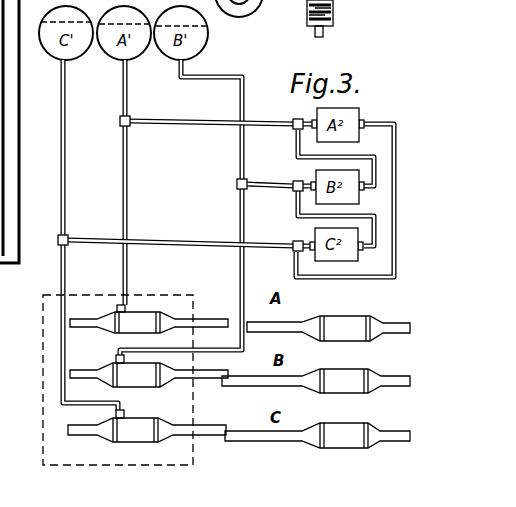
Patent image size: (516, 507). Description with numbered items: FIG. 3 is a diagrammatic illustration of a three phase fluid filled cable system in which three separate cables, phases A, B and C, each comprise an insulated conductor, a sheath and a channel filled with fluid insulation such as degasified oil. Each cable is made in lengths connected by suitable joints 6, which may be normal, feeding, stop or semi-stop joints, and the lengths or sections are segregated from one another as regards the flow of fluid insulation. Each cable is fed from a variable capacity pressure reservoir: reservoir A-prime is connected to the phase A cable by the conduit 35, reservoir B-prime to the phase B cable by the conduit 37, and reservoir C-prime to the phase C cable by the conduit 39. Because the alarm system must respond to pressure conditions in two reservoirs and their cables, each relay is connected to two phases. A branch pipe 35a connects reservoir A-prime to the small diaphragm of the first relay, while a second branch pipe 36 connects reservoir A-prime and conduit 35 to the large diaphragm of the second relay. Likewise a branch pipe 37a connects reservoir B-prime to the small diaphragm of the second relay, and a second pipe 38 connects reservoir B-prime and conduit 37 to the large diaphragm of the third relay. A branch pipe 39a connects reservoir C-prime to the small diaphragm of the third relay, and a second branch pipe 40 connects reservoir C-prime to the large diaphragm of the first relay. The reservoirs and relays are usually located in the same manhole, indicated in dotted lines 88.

The joint 6 is at (148, 313).
The conduit 35 is at (128, 92).
The branch pipe 35a is at (208, 120).
The second branch pipe 36 is at (373, 160).
The conduit 37 is at (238, 153).
The branch pipe 37a is at (275, 181).
The second pipe 38 is at (373, 218).
The conduit 39 is at (66, 188).
The branch pipe 39a is at (193, 238).
The second branch pipe 40 is at (396, 240).
The manhole 88 is at (43, 352).